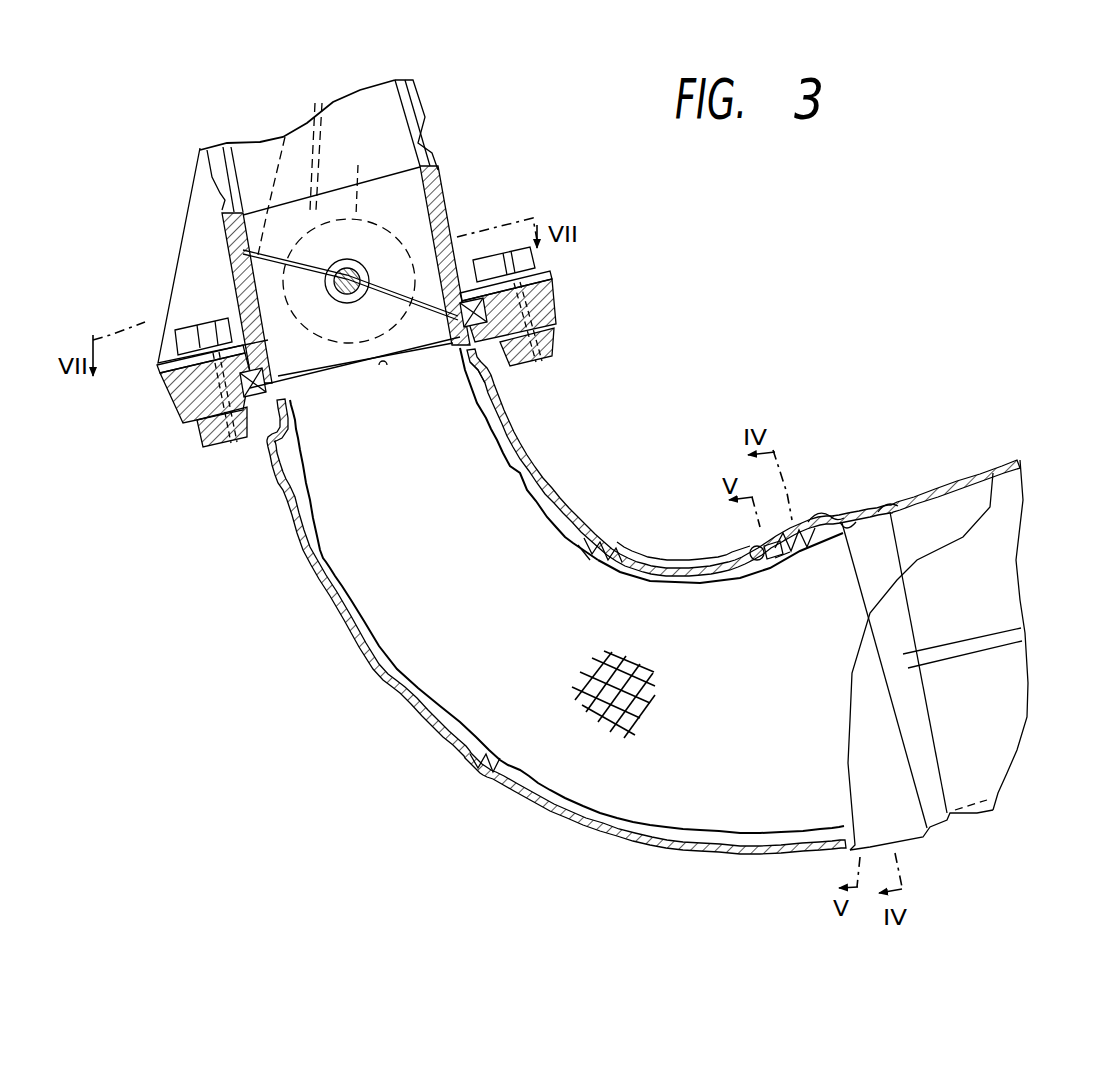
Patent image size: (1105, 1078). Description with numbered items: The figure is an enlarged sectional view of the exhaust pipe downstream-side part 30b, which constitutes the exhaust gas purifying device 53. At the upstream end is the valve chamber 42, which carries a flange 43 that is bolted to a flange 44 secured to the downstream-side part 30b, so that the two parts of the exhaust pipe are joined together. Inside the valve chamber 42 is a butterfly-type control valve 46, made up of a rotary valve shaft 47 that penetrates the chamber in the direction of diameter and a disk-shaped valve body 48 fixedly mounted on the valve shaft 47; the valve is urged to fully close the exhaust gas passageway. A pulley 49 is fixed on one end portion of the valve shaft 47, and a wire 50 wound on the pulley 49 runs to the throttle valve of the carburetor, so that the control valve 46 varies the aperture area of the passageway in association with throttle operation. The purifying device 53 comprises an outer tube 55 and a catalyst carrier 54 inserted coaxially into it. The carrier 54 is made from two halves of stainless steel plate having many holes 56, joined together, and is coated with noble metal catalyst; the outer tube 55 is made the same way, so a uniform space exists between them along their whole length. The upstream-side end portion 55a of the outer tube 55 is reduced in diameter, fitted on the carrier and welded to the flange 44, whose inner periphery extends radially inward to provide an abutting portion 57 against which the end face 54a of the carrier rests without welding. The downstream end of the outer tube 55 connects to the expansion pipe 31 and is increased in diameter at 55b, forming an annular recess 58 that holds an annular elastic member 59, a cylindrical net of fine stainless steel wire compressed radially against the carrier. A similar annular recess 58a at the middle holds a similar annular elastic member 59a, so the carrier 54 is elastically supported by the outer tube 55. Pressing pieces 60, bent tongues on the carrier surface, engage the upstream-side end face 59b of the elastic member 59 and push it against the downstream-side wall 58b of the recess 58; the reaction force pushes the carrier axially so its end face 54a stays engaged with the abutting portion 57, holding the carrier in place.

The downstream-side part 30b is at (544, 514).
The expansion pipe 31 is at (935, 625).
The valve chamber 42 is at (336, 255).
The flange 43 is at (550, 274).
The flange 44 is at (546, 322).
The control valve 46 is at (498, 162).
The valve shaft 47 is at (278, 281).
The valve body 48 is at (349, 264).
The pulley 49 is at (363, 174).
The wire 50 is at (319, 144).
The exhaust gas purifying device 53 is at (487, 622).
The catalyst carrier 54 is at (743, 504).
The end face 54a is at (355, 414).
The outer tube 55 is at (556, 626).
The upstream-side end portion 55a is at (522, 395).
The increased-diameter portion 55b is at (840, 475).
The holes 56 is at (653, 694).
The abutting portion 57 is at (268, 382).
The annular recess 58 is at (708, 531).
The annular recess 58a is at (597, 515).
The downstream-side wall 58b is at (883, 490).
The annular elastic member 59 is at (798, 487).
The annular elastic member 59a is at (566, 589).
The upstream-side end face 59b is at (802, 590).
The pressing pieces 60 is at (758, 588).